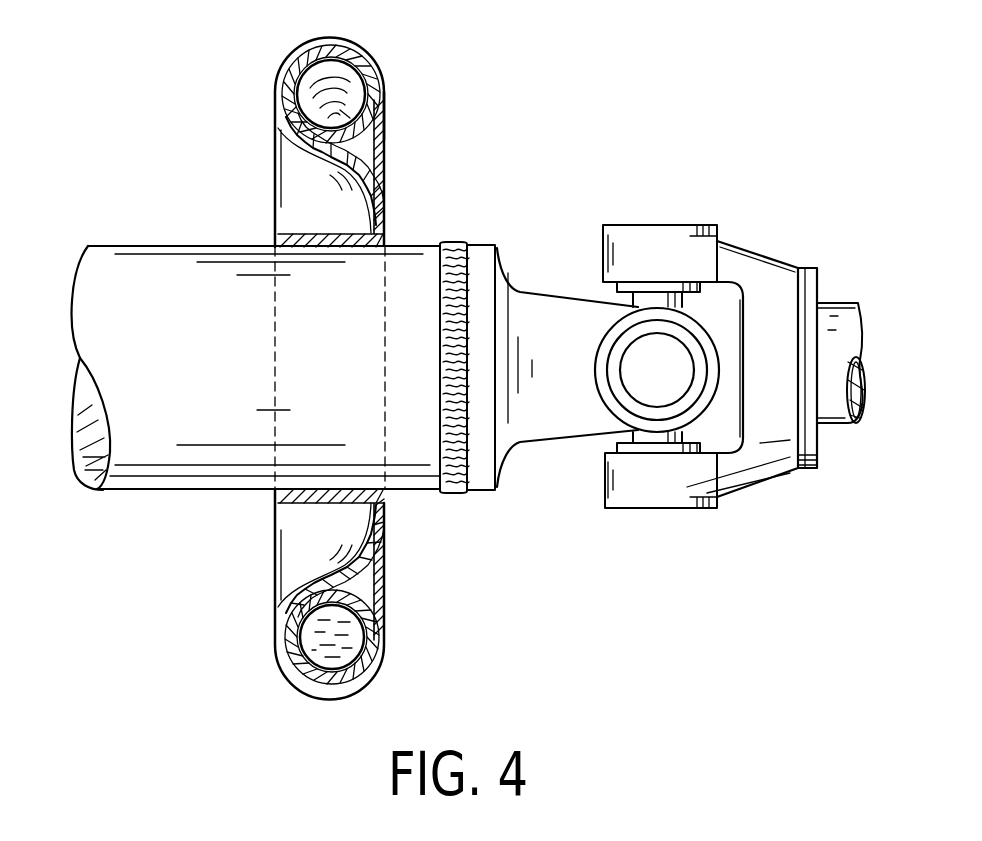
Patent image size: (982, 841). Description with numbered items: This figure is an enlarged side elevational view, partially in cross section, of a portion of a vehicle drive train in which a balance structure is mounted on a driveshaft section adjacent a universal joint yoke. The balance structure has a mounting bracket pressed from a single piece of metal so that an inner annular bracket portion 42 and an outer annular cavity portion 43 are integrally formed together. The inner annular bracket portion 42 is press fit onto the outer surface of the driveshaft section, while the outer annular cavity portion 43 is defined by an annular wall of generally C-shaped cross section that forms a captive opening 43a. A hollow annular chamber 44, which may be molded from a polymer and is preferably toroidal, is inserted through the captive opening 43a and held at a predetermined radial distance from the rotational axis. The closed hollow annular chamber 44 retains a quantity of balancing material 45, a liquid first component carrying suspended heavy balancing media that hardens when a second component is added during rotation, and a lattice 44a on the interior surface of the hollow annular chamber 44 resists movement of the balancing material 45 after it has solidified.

The inner annular bracket portion 42 is at (418, 359).
The outer annular cavity portion 43 is at (345, 36).
The captive opening 43a is at (394, 80).
The hollow annular chamber 44 is at (399, 359).
The lattice 44a is at (376, 120).
The balancing material 45 is at (383, 631).